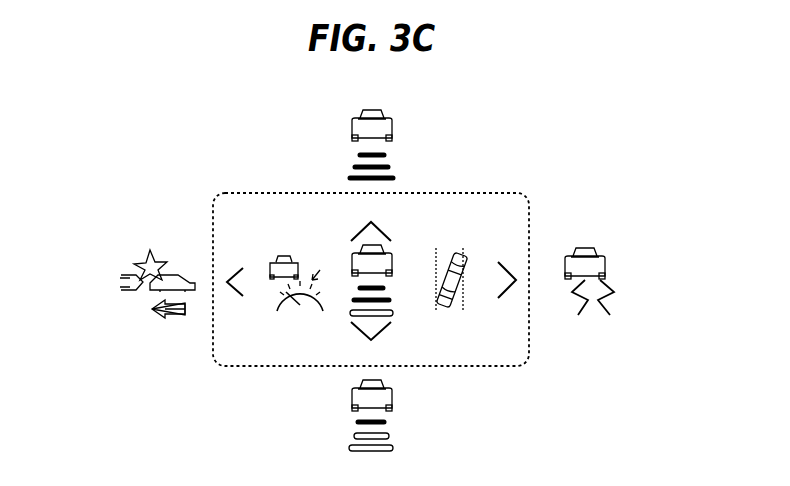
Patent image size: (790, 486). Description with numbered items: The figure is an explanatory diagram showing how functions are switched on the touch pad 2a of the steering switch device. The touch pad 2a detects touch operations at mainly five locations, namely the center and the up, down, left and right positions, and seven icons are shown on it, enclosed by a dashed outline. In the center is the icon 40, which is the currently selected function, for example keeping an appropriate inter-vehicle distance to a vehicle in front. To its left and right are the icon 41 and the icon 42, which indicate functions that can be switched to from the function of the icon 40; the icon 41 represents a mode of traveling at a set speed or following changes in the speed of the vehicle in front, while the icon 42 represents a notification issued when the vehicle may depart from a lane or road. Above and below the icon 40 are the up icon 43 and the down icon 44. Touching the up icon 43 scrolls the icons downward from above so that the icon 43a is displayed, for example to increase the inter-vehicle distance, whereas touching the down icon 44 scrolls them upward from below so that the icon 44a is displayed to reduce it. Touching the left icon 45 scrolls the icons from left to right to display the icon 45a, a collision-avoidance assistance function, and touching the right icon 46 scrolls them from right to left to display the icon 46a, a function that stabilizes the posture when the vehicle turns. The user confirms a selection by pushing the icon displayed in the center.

The touch pad 2a is at (545, 169).
The icon 40 is at (398, 246).
The icon 41 is at (283, 256).
The icon 42 is at (459, 252).
The up icon 43 is at (354, 236).
The icon 43a is at (392, 130).
The down icon 44 is at (380, 330).
The icon 44a is at (392, 406).
The left icon 45 is at (226, 266).
The icon 45a is at (147, 262).
The right icon 46 is at (511, 264).
The icon 46a is at (587, 249).